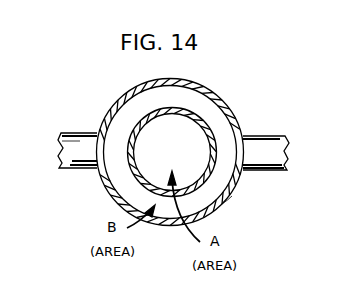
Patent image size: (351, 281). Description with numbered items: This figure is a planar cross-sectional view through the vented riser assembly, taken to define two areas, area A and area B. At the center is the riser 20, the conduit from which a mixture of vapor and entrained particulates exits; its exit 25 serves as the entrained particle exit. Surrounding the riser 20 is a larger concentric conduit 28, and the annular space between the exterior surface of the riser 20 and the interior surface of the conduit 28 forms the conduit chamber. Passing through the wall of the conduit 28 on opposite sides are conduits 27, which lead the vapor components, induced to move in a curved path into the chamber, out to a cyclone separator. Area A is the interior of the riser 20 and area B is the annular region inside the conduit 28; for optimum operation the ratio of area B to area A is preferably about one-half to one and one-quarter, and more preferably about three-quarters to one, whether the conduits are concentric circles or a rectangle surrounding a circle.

The riser 20 is at (205, 122).
The exit 25 is at (118, 101).
The conduits 27 is at (68, 170).
The conduit 28 is at (236, 192).